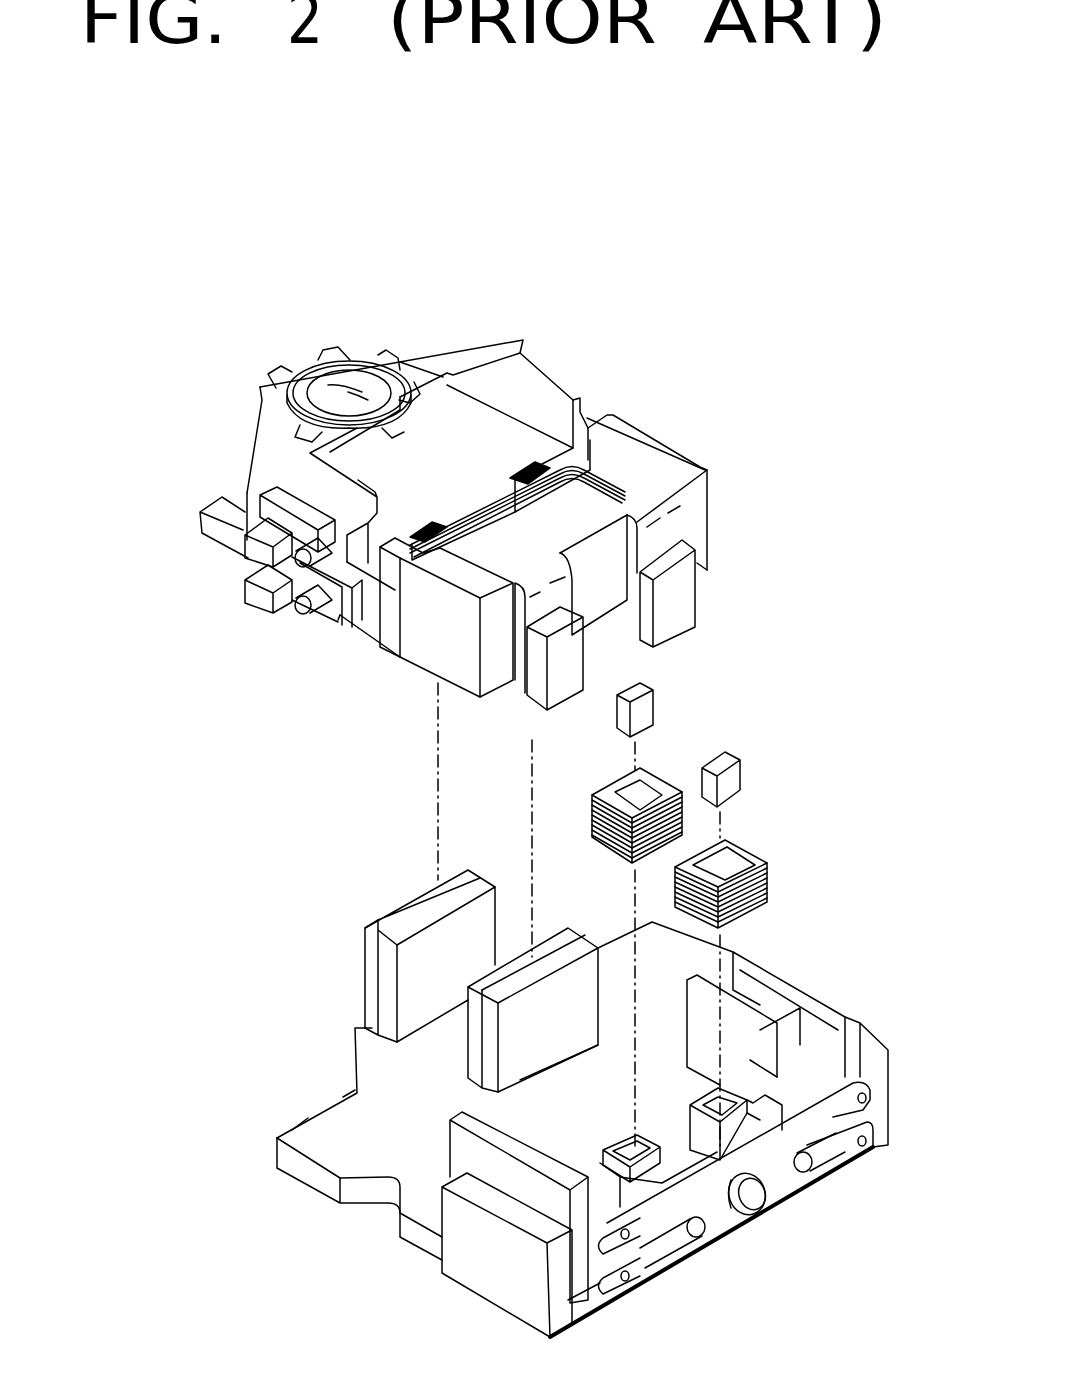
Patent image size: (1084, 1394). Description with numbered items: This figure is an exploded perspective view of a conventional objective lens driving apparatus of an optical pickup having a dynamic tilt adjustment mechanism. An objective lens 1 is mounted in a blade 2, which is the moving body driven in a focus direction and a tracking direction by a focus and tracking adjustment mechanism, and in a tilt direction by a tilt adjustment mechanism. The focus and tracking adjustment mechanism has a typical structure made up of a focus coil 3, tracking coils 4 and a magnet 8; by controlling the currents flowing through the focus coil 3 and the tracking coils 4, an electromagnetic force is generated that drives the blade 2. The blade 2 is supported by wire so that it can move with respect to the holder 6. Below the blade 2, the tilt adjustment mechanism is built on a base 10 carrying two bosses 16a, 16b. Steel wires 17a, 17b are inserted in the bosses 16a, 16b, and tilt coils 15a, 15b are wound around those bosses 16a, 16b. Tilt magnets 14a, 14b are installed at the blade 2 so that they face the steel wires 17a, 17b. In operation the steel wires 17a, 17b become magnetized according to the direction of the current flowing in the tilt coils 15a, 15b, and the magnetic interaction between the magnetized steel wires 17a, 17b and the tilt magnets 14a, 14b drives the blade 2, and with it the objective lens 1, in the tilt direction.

The objective lens 1 is at (357, 378).
The blade 2 is at (427, 350).
The focus coil 3 is at (605, 480).
The tracking coils 4 is at (518, 452).
The holder 6 is at (783, 1183).
The magnet 8 is at (515, 952).
The base 10 is at (312, 1132).
The tilt magnet 14a is at (527, 703).
The tilt magnet 14b is at (690, 607).
The tilt coil 15a is at (663, 780).
The tilt coil 15b is at (767, 890).
The boss 16a is at (628, 1150).
The boss 16b is at (743, 1095).
The steel wire 17a is at (650, 712).
The steel wire 17b is at (735, 775).